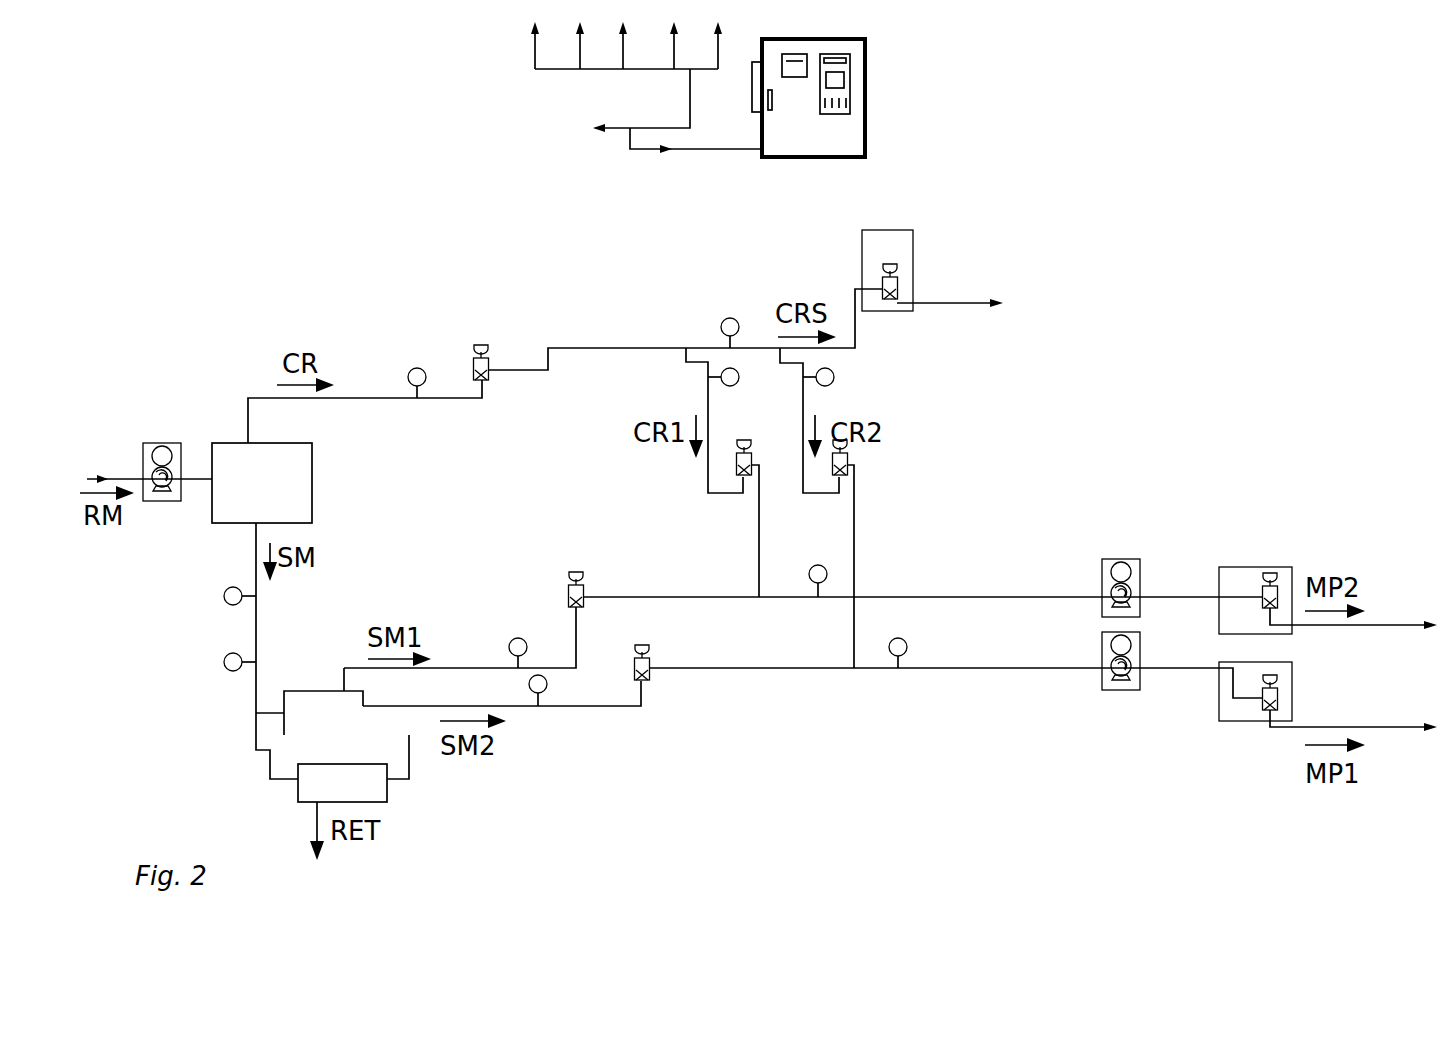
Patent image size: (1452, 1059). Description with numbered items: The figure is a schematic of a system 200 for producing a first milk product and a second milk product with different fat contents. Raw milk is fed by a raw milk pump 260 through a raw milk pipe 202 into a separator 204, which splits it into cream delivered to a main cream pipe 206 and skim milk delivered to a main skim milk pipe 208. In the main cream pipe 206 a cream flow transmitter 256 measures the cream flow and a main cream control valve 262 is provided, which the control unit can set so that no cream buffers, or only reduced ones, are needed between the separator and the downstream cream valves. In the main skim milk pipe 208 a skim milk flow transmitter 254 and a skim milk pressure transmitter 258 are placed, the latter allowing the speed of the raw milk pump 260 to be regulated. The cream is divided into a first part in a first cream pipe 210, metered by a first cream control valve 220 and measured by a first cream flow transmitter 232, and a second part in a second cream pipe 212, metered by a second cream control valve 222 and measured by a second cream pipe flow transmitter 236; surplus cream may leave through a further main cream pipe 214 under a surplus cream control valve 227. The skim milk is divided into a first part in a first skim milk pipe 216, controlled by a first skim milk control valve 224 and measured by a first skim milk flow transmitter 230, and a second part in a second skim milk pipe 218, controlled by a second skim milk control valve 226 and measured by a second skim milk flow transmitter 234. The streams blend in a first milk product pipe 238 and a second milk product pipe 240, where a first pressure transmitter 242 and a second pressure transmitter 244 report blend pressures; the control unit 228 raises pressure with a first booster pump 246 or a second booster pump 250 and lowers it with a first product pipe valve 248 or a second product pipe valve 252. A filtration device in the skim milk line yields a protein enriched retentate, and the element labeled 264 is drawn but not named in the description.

The system 200 is at (283, 320).
The raw milk pipe 202 is at (125, 478).
The separator 204 is at (293, 468).
The main cream pipe 206 is at (385, 398).
The main skim milk pipe 208 is at (256, 665).
The first cream pipe 210 is at (708, 478).
The second cream pipe 212 is at (805, 365).
The main cream pipe 214 is at (957, 303).
The first skim milk pipe 216 is at (568, 637).
The second skim milk pipe 218 is at (585, 706).
The first cream control valve 220 is at (742, 482).
The second cream control valve 222 is at (850, 460).
The first skim milk control valve 224 is at (569, 590).
The second skim milk control valve 226 is at (650, 678).
The surplus cream control valve 227 is at (866, 268).
The control unit 228 is at (860, 145).
The first skim milk flow transmitter 230 is at (508, 648).
The first cream flow transmitter 232 is at (708, 393).
The second skim milk flow transmitter 234 is at (545, 692).
The second cream pipe flow transmitter 236 is at (835, 377).
The first milk product pipe 238 is at (1010, 597).
The second milk product pipe 240 is at (1000, 668).
The first pressure transmitter 242 is at (808, 590).
The second pressure transmitter 244 is at (893, 660).
The first booster pump 246 is at (1122, 558).
The first product pipe valve 248 is at (1235, 570).
The second booster pump 250 is at (1130, 692).
The second product pipe valve 252 is at (1237, 717).
The skim milk flow transmitter 254 is at (224, 660).
The cream flow transmitter 256 is at (417, 367).
The skim milk pressure transmitter 258 is at (224, 592).
The raw milk pump 260 is at (172, 450).
The main cream control valve 262 is at (480, 345).
The return unit 264 is at (380, 787).